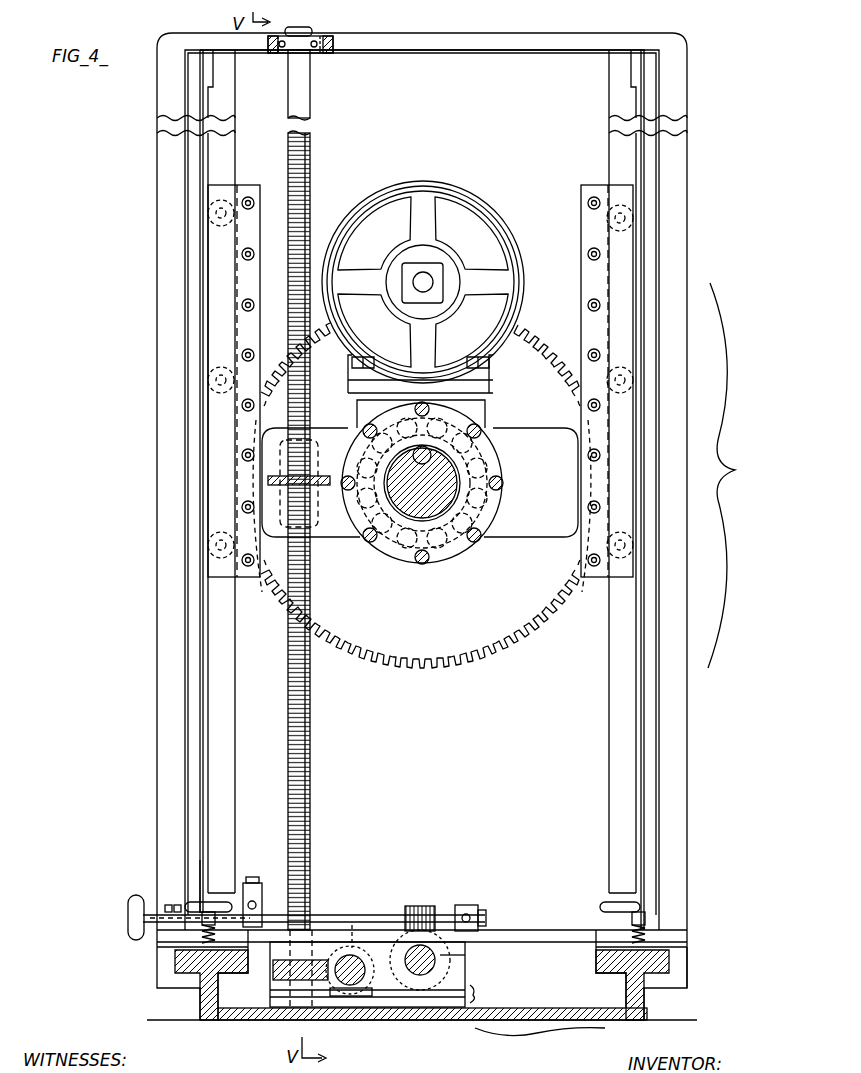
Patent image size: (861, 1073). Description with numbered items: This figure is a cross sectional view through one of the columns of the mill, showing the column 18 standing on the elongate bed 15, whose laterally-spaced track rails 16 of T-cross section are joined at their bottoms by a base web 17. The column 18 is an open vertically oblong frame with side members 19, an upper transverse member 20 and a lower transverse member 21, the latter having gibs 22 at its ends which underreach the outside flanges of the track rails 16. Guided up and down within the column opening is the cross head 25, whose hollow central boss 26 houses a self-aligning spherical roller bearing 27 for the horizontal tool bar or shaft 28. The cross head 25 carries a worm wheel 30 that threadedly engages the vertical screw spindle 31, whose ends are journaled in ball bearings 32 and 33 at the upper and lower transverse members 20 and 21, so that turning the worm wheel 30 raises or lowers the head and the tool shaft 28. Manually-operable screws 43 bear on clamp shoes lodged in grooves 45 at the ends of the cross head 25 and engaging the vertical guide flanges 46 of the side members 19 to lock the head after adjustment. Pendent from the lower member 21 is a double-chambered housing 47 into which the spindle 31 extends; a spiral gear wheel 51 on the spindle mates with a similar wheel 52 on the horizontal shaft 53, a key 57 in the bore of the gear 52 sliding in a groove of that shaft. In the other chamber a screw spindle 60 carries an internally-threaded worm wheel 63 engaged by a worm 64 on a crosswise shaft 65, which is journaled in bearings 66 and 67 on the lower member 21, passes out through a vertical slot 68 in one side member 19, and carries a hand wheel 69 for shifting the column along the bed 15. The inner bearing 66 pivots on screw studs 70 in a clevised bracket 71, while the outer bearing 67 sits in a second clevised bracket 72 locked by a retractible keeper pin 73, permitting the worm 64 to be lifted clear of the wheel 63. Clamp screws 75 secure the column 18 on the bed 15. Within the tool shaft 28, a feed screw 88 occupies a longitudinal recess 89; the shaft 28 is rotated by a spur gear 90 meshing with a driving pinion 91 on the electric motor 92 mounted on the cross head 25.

The bed 15 is at (540, 1045).
The track rails 16 is at (205, 996).
The base web 17 is at (545, 1008).
The column 18 is at (738, 475).
The side members 19 is at (157, 716).
The upper transverse member 20 is at (428, 46).
The lower transverse member 21 is at (548, 930).
The gibs 22 is at (157, 969).
The cross head 25 is at (490, 546).
The hollow central boss 26 is at (466, 554).
The self-aligning spherical roller bearing 27 is at (392, 548).
The tool bar or shaft 28 is at (452, 494).
The worm wheel 30 is at (320, 470).
The vertical screw spindle 31 is at (312, 709).
The ball bearing 32 is at (320, 53).
The ball bearing 33 is at (275, 1008).
The manually-operable screws 43 is at (221, 227).
The grooves 45 is at (258, 592).
The vertical guide flanges 46 is at (236, 639).
The double-chambered housing 47 is at (386, 997).
The spiral gear wheel 51 is at (286, 1008).
The spiral gear wheel 52 is at (346, 1000).
The horizontal shaft 53 is at (356, 998).
The key 57 is at (351, 925).
The screw spindle 60 is at (432, 962).
The worm wheel 63 is at (455, 956).
The worm 64 is at (425, 905).
The shaft 65 is at (376, 914).
The bearing 66 is at (468, 904).
The bearing 67 is at (257, 905).
The vertical slot 68 is at (198, 878).
The hand wheel 69 is at (128, 917).
The screw studs 70 is at (470, 914).
The clevised bracket 71 is at (486, 914).
The clevised bracket 72 is at (253, 877).
The retractible keeper pin 73 is at (258, 895).
The clamp screws 75 is at (192, 902).
The feed screw 88 is at (442, 456).
The longitudinal recess 89 is at (418, 448).
The spur gear 90 is at (531, 347).
The driving pinion 91 is at (421, 262).
The electric motor 92 is at (427, 181).